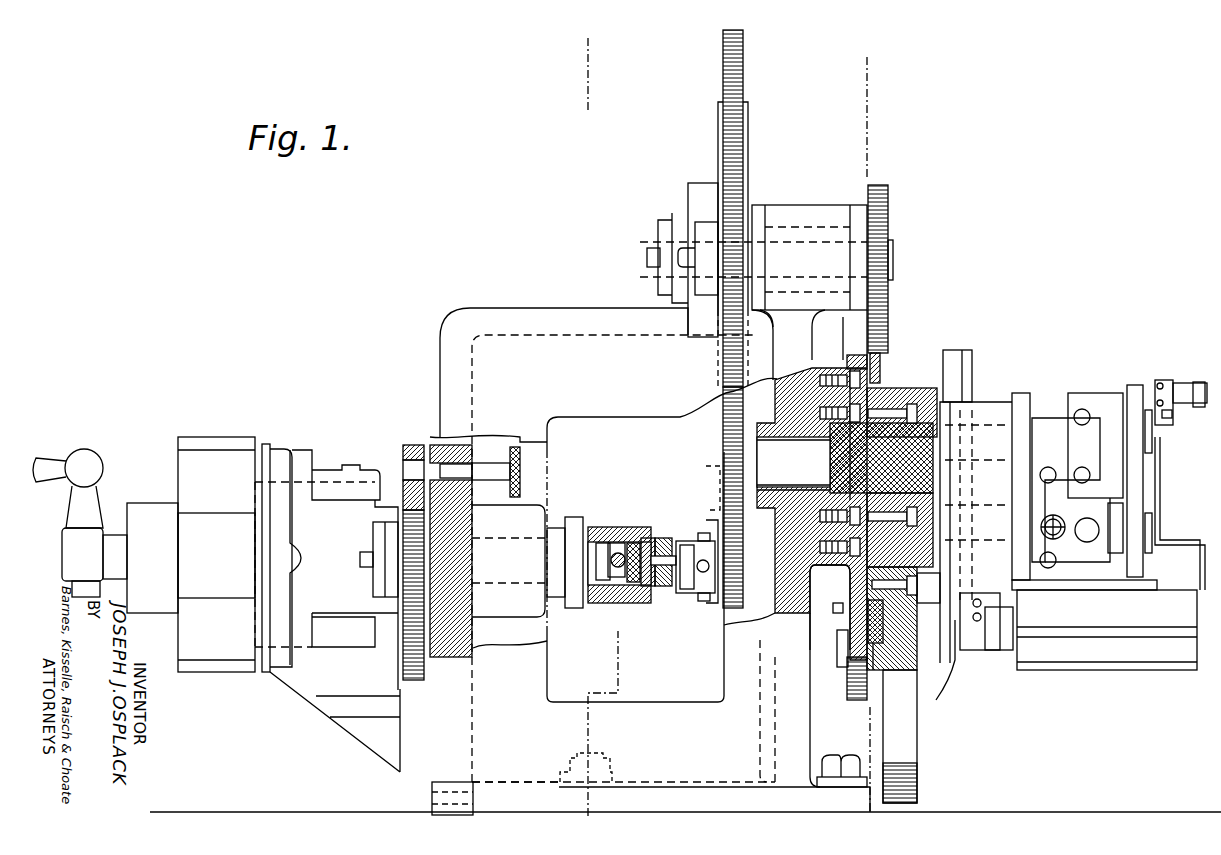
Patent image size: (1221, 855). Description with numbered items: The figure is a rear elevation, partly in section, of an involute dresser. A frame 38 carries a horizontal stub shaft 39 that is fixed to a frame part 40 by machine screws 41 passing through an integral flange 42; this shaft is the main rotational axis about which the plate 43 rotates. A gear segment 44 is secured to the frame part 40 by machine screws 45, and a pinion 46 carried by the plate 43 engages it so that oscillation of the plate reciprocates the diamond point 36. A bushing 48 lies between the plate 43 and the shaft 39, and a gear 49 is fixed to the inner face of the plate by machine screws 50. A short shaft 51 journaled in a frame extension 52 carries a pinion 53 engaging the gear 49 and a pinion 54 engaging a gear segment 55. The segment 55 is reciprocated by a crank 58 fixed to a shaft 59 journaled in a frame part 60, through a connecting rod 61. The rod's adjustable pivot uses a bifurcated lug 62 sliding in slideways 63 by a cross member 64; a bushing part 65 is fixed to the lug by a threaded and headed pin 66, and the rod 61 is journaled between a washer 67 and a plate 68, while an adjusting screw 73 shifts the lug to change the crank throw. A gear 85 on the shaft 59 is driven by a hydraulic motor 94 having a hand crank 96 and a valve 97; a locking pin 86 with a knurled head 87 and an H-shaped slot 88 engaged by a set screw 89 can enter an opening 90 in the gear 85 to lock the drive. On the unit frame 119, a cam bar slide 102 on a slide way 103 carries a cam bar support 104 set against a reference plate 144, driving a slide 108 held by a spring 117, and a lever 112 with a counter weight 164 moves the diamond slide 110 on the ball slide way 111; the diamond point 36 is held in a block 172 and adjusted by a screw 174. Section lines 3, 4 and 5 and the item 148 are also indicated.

The section line 3- 3 is at (578, 64).
The section line 4- 4 is at (876, 82).
The section line 5- 5 is at (861, 149).
The diamond point 36 is at (1178, 392).
The frame 38 is at (427, 772).
The stub shaft 39 is at (745, 502).
The frame part 40 is at (830, 676).
The machine screws 41 is at (816, 430).
The flange 42 is at (793, 463).
The plate 43 is at (917, 766).
The gear segment 44 is at (840, 626).
The machine screws 45 is at (841, 380).
The pinion 46 is at (850, 682).
The bushing 48 is at (890, 428).
The gear 49 is at (880, 372).
The machine screws 50 is at (921, 604).
The short shaft 51 is at (894, 260).
The extension 52 is at (808, 216).
The pinion 53 is at (886, 190).
The pinion 54 is at (741, 196).
The gear segment 55 is at (735, 153).
The crank 58 is at (621, 532).
The shaft 59 is at (598, 527).
The frame part 60 is at (540, 605).
The connecting rod 61 is at (690, 593).
The bifurcated lug 62 is at (613, 575).
The slideways 63 is at (634, 588).
The cross member 64 is at (648, 548).
The bushing part 65 is at (662, 549).
The threaded and headed pin 66 is at (690, 552).
The washer 67 is at (700, 597).
The plate 68 is at (660, 590).
The adjusting screw 73 is at (615, 546).
The gear 85 is at (410, 446).
The locking pin 86 is at (490, 466).
The knurled head 87 is at (517, 450).
The H-shaped slot 88 is at (465, 472).
The set screw 89 is at (450, 452).
The opening 90 is at (405, 470).
The hydraulic motor 94 is at (232, 456).
The hand crank 96 is at (100, 461).
The valve 97 is at (335, 478).
The cam bar slide 102 is at (976, 652).
The slide way 103 is at (963, 353).
The cam bar support 104 is at (1012, 586).
The slide 108 is at (1079, 539).
The diamond slide 110 is at (1100, 402).
The ball slide way 111 is at (1050, 420).
The lever 112 is at (1138, 396).
The spring 117 is at (1069, 517).
The unit frame 119 is at (985, 402).
The reference plate 144 is at (990, 642).
The arm 148 is at (943, 669).
The counter weight 164 is at (1135, 664).
The block 172 is at (1167, 420).
The screw 174 is at (1207, 393).